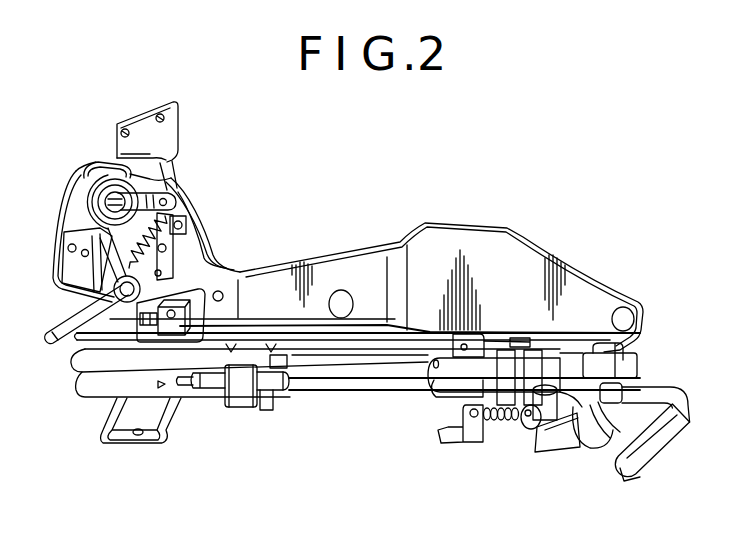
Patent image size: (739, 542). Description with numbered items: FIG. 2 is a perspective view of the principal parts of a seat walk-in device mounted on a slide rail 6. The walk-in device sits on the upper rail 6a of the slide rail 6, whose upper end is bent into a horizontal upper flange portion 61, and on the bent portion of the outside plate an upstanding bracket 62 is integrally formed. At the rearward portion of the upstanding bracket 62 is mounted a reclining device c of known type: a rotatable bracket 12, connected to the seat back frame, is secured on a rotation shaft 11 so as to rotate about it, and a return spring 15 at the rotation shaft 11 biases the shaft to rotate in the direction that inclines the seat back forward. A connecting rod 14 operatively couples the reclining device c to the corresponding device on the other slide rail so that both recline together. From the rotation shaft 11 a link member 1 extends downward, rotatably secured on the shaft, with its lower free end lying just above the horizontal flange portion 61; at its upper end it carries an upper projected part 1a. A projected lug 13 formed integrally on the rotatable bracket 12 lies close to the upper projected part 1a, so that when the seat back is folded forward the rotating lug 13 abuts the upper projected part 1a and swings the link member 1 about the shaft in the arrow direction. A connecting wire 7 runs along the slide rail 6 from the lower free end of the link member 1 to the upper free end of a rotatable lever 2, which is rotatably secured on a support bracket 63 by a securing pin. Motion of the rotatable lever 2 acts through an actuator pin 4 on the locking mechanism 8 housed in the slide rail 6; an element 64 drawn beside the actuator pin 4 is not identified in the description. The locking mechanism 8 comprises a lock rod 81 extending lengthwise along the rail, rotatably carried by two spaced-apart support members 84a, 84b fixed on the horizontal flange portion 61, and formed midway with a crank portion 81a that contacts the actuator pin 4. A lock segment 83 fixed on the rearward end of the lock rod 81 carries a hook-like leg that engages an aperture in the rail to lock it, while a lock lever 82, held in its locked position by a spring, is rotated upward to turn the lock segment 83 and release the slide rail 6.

The link member 1 is at (63, 273).
The upper projected part 1a is at (108, 163).
The rotatable lever 2 is at (503, 428).
The actuator pin 4 is at (535, 425).
The slide rail 6 is at (80, 397).
The upper rail 6a is at (70, 383).
The connecting wire 7 is at (278, 325).
The locking mechanism 8 is at (350, 396).
The rotation shaft 11 is at (96, 199).
The rotatable bracket 12 is at (137, 120).
The projected lug 13 is at (85, 178).
The connecting rod 14 is at (71, 320).
The return spring 15 is at (92, 208).
The horizontal upper flange portion 61 is at (620, 351).
The upstanding bracket 62 is at (460, 244).
The support bracket 63 is at (455, 437).
The spring 64 is at (488, 422).
The lock rod 81 is at (376, 395).
The crank portion 81a is at (468, 396).
The lock lever 82 is at (641, 478).
The lock segment 83 is at (240, 410).
The support member 84a is at (625, 380).
The support member 84b is at (280, 395).
The reclining device c is at (207, 194).